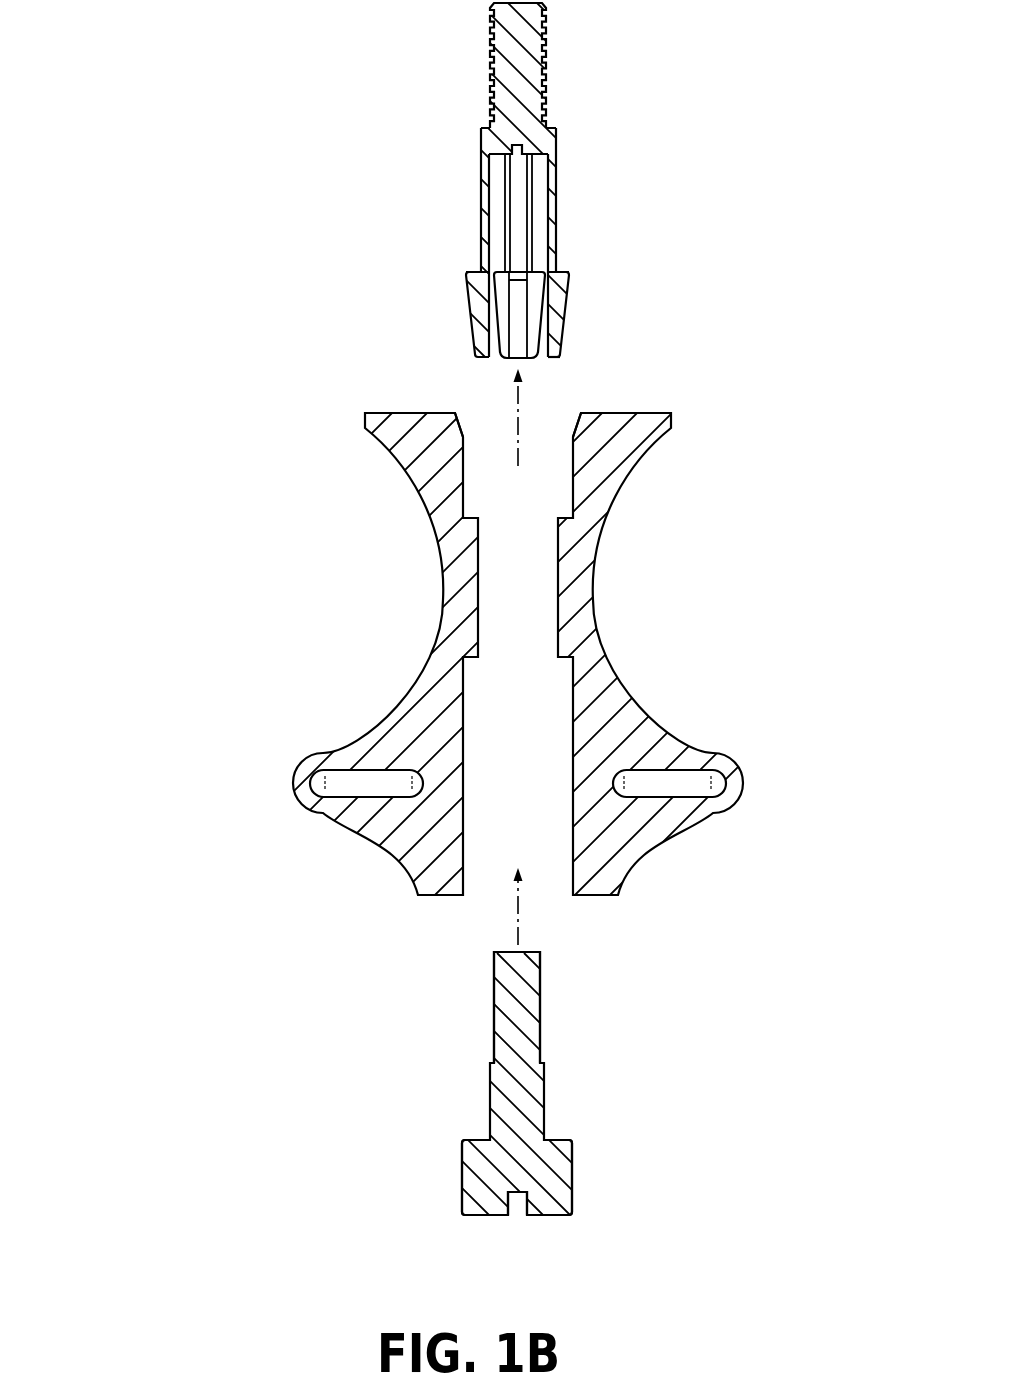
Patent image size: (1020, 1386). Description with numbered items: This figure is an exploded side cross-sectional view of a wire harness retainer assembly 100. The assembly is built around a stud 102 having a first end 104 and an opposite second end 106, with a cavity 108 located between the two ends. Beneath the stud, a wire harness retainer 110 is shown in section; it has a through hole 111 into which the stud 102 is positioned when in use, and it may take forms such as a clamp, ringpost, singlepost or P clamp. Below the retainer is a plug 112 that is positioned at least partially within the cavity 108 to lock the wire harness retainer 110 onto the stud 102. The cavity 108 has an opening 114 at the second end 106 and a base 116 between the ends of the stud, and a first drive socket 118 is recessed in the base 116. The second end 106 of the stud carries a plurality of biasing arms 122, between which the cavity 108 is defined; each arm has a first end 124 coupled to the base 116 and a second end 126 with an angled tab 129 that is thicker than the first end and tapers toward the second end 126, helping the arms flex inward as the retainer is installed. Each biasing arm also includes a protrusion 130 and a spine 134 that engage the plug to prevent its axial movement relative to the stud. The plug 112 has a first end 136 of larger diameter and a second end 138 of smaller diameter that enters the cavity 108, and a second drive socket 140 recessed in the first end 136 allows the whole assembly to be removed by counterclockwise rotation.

The wire harness retainer assembly 100 is at (147, 168).
The stud 102 is at (634, 121).
The first end 104 is at (478, 5).
The second end 106 is at (459, 341).
The cavity 108 is at (490, 253).
The wire harness retainer 110 is at (372, 560).
The through hole 111 is at (482, 420).
The plug 112 is at (457, 1075).
The opening 114 is at (538, 378).
The base 116 is at (492, 143).
The first drive socket 118 is at (541, 150).
The biasing arms 122 is at (484, 214).
The first end 124 is at (468, 144).
The second end 126 is at (570, 352).
The angled tab 129 is at (565, 312).
The protrusion 130 is at (524, 268).
The spine 134 is at (513, 195).
The first end 136 is at (601, 1213).
The second end 138 is at (565, 953).
The second drive socket 140 is at (518, 1198).